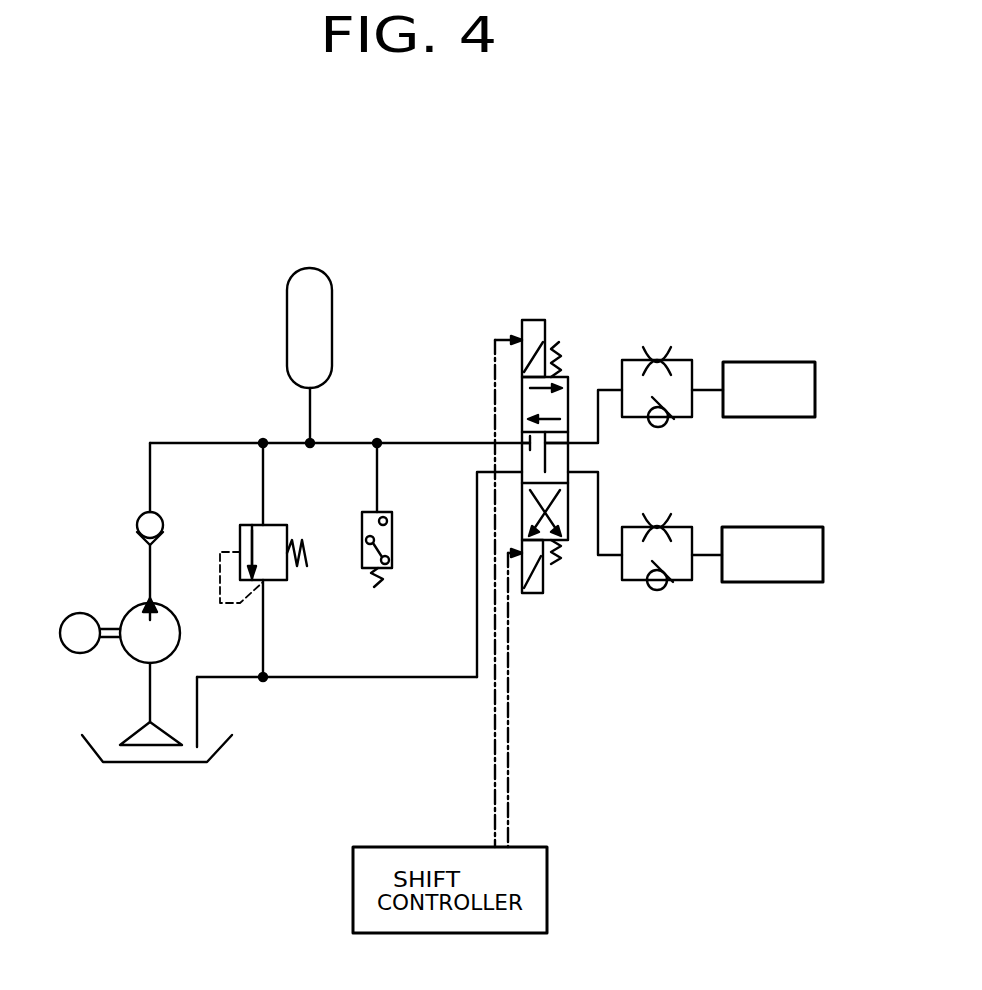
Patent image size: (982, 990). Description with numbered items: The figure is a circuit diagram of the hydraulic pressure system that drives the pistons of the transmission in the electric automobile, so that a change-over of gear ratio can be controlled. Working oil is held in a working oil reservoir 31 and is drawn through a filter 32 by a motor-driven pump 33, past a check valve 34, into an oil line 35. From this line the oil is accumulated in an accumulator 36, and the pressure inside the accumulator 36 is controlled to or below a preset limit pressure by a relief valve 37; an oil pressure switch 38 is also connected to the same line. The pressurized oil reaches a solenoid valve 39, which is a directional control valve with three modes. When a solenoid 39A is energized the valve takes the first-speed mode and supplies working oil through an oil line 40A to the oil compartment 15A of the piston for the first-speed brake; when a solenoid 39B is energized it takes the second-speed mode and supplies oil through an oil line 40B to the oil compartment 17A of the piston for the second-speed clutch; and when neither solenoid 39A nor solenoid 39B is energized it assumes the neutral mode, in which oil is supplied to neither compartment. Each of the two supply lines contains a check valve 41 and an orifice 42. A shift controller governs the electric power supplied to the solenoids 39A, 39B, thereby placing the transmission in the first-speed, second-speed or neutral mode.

The oil compartment 15A is at (810, 360).
The oil compartment 17A is at (812, 583).
The working oil reservoir 31 is at (107, 748).
The filter 32 is at (152, 742).
The motor-driven pump 33 is at (126, 657).
The check valve 34 is at (140, 533).
The oil line 35 is at (395, 443).
The accumulator 36 is at (287, 295).
The relief valve 37 is at (241, 525).
The oil pressure switch 38 is at (362, 550).
The solenoid valve 39 is at (522, 403).
The solenoid 39A is at (538, 320).
The solenoid 39B is at (532, 596).
The oil line 40A is at (614, 389).
The oil line 40B is at (588, 557).
The check valve 41 is at (660, 428).
The orifice 42 is at (665, 351).